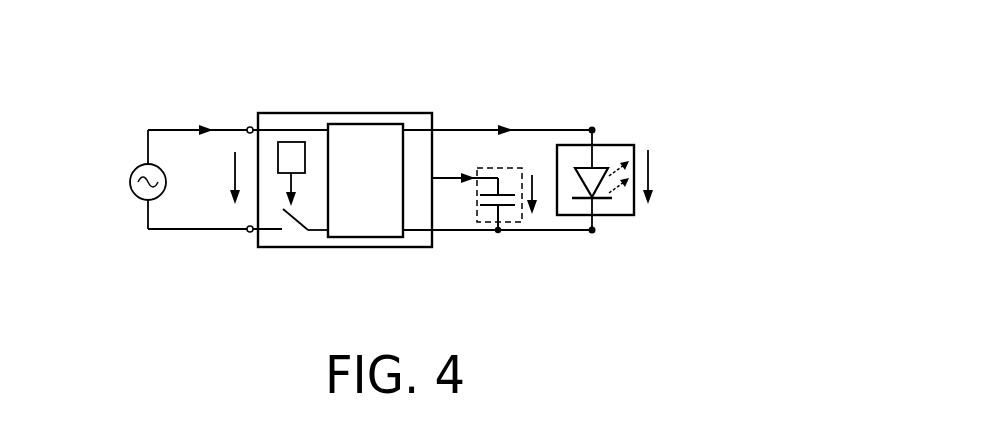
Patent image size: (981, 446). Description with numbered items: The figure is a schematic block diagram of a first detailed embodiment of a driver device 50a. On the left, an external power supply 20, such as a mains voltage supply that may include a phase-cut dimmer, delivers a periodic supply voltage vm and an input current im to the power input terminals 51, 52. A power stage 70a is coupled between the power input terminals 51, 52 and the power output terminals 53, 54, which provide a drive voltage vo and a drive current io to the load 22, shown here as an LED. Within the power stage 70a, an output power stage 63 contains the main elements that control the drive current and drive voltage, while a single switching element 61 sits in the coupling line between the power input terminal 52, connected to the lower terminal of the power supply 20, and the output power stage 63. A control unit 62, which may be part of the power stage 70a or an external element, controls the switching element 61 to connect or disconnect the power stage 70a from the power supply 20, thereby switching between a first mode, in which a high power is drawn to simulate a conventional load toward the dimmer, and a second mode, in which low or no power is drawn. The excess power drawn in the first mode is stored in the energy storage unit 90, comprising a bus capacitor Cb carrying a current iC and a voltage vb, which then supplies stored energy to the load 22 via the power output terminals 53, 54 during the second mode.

The driver device 50a is at (599, 58).
The external power supply 20 is at (133, 172).
The power input terminal 51 is at (250, 126).
The power input terminal 52 is at (250, 233).
The power stage 70a is at (370, 113).
The output power stage 63 is at (368, 238).
The control unit 62 is at (290, 140).
The switching element 61 is at (302, 223).
The energy storage unit 90 is at (527, 217).
The load 22 is at (625, 145).
The power output terminal 53 is at (595, 128).
The power output terminal 54 is at (595, 232).